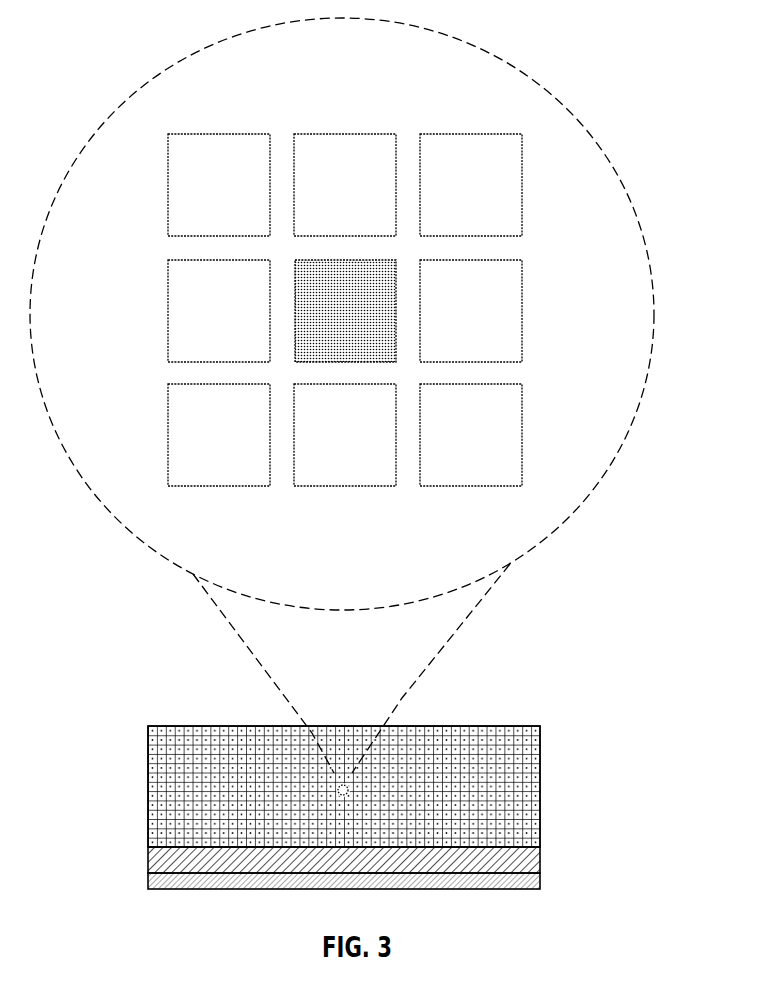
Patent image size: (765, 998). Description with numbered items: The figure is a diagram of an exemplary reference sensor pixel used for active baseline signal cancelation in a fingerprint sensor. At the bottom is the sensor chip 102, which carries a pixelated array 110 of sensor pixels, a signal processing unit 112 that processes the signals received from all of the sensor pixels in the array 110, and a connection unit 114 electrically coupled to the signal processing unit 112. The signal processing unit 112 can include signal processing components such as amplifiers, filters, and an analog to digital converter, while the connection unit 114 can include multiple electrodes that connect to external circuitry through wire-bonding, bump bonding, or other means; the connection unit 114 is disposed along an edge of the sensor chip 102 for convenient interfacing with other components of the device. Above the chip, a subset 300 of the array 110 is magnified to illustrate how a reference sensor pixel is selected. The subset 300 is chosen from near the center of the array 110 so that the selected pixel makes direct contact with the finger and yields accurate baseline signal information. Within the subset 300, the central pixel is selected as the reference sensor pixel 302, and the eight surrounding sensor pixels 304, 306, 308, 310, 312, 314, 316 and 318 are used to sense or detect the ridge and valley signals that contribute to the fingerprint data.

The sensor chip 102 is at (350, 820).
The array of sensor pixels 110 is at (541, 742).
The signal processing unit 112 is at (541, 858).
The connection unit 114 is at (539, 889).
The subset of the array of sensor pixels 300 is at (592, 135).
The reference sensor pixel 302 is at (375, 270).
The sensor pixel 304 is at (165, 187).
The sensor pixel 306 is at (167, 313).
The sensor pixel 308 is at (168, 437).
The sensor pixel 310 is at (320, 138).
The sensor pixel 312 is at (325, 488).
The sensor pixel 314 is at (520, 190).
The sensor pixel 316 is at (520, 313).
The sensor pixel 318 is at (522, 438).